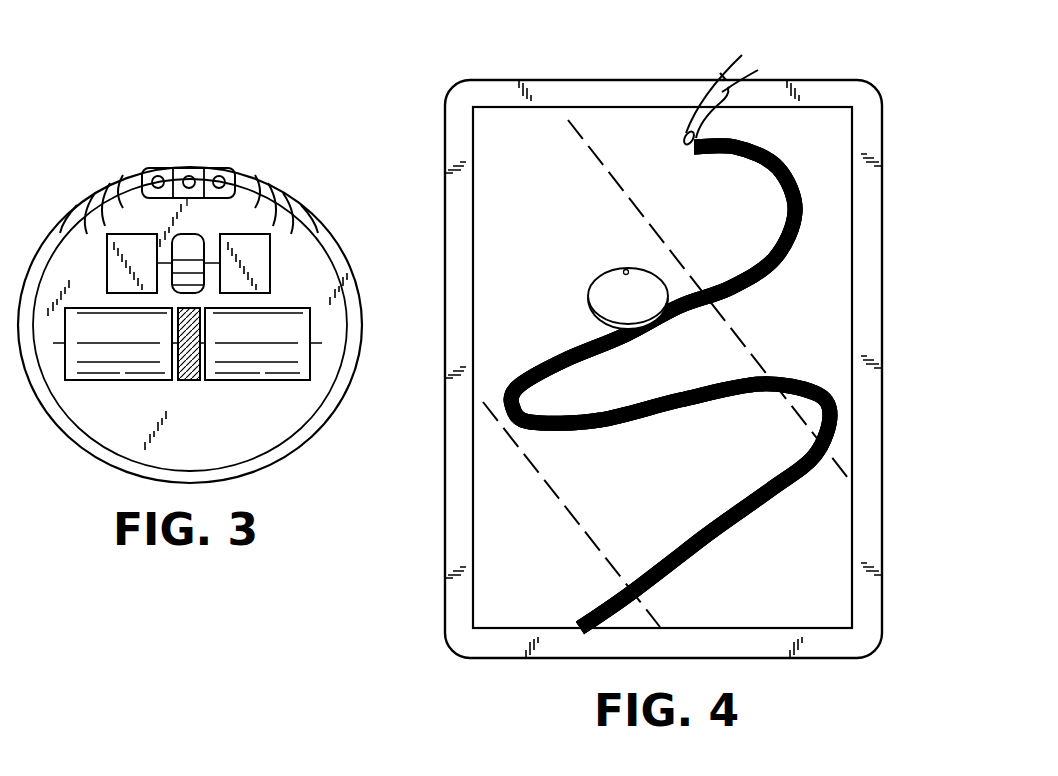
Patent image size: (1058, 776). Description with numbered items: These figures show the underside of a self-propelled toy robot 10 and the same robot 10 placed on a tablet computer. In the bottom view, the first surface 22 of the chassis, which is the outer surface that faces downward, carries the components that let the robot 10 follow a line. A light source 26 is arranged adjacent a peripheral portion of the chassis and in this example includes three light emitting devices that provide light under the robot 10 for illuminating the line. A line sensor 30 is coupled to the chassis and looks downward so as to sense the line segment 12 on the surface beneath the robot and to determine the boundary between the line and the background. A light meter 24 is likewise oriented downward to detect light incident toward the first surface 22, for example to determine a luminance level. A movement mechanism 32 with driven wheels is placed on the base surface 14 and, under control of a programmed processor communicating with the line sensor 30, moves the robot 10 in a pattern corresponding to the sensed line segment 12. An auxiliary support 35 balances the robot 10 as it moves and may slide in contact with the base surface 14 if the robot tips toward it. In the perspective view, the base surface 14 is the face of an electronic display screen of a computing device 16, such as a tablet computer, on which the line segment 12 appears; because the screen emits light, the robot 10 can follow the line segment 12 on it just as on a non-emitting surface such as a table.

In FIG. 3, the toy robot 10 is at (95, 158).
In FIG. 4, the toy robot 10 is at (600, 272).
In FIG. 4, the line segment 12 is at (718, 507).
In FIG. 4, the base surface 14 is at (792, 344).
In FIG. 4, the computing device 16 is at (447, 80).
In FIG. 3, the first surface 22 is at (204, 424).
In FIG. 3, the light meter 24 is at (265, 268).
In FIG. 3, the light source 26 is at (217, 176).
In FIG. 3, the line sensor 30 is at (112, 283).
In FIG. 3, the movement mechanism 32 is at (123, 375).
In FIG. 3, the auxiliary support 35 is at (193, 242).